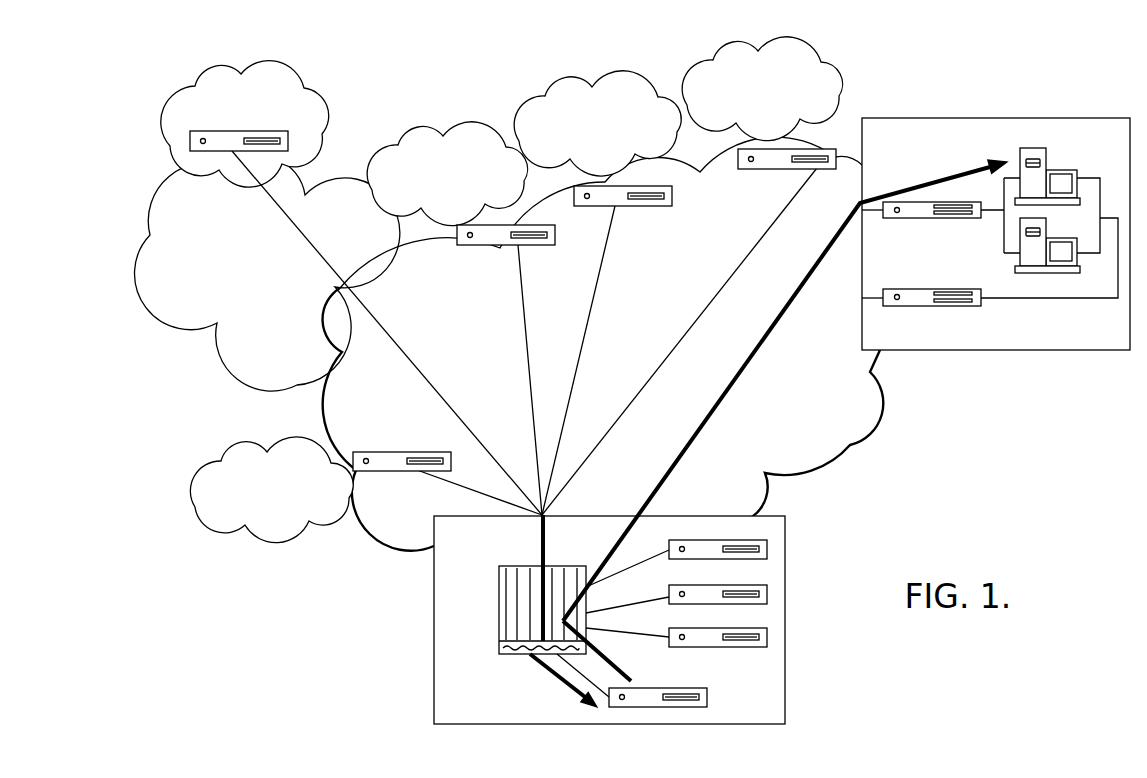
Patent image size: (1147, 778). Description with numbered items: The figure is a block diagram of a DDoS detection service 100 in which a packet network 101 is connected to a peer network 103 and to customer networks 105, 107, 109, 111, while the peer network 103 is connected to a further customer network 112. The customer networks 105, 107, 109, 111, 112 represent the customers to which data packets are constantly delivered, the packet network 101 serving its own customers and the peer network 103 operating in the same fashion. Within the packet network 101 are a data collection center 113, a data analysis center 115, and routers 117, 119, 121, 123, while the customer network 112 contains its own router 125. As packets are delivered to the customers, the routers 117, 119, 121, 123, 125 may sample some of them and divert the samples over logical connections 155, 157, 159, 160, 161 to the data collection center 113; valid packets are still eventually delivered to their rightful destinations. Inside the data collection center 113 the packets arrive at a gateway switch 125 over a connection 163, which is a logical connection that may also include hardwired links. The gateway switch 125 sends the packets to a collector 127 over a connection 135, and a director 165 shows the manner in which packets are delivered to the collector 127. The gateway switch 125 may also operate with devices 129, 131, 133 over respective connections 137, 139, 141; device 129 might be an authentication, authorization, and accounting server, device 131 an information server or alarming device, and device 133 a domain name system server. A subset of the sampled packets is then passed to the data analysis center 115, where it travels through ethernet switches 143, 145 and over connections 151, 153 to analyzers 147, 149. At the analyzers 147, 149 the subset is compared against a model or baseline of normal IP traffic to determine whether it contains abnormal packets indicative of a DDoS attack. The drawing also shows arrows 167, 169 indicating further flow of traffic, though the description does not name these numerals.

The DDoS detection service 100 is at (966, 501).
The packet network 101 is at (855, 446).
The peer network 103 is at (299, 387).
The customer network 105 is at (786, 46).
The customer network 107 is at (622, 76).
The customer network 109 is at (473, 126).
The customer network 111 is at (260, 542).
The customer network 112 is at (270, 63).
The data collection center 113 is at (786, 668).
The data analysis center 115 is at (1005, 351).
The router 117 is at (759, 170).
The router 119 is at (643, 207).
The router 121 is at (536, 246).
The router 123 is at (401, 451).
The gateway switch / router 125 is at (289, 142).
The collector 127 is at (708, 697).
The device 129 is at (767, 637).
The device 131 is at (767, 595).
The device 133 is at (767, 550).
The connection 135 is at (561, 660).
The connection 137 is at (637, 633).
The connection 139 is at (633, 604).
The connection 141 is at (646, 560).
The ethernet switch 143 is at (937, 219).
The ethernet switch 145 is at (937, 307).
The analyzer 147 is at (1040, 148).
The analyzer 149 is at (1032, 274).
The connection 151 is at (991, 214).
The connection 153 is at (1095, 299).
The logical connection 155 is at (652, 378).
The logical connection 157 is at (581, 352).
The logical connection 159 is at (527, 348).
The logical connection 160 is at (427, 380).
The logical connection 161 is at (446, 481).
The connection 163 is at (541, 545).
The director 165 is at (558, 683).
The traffic flow 167 is at (625, 673).
The mirrored traffic flow 169 is at (760, 345).